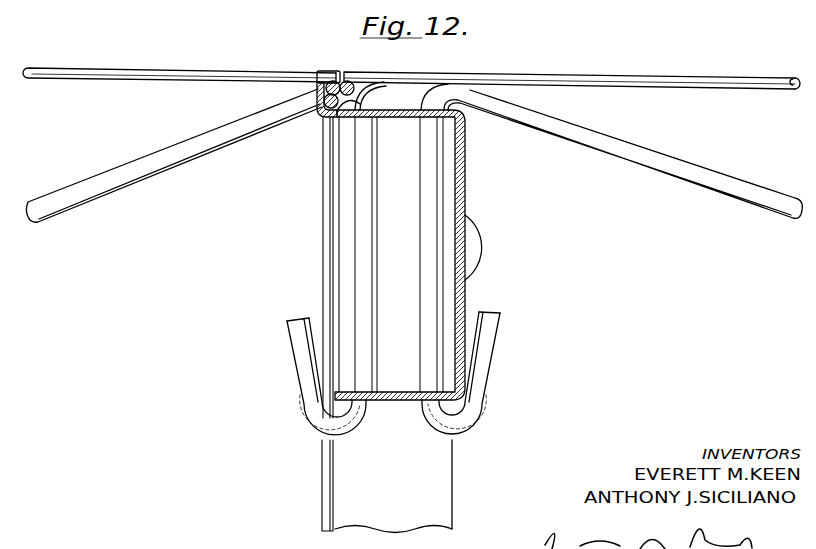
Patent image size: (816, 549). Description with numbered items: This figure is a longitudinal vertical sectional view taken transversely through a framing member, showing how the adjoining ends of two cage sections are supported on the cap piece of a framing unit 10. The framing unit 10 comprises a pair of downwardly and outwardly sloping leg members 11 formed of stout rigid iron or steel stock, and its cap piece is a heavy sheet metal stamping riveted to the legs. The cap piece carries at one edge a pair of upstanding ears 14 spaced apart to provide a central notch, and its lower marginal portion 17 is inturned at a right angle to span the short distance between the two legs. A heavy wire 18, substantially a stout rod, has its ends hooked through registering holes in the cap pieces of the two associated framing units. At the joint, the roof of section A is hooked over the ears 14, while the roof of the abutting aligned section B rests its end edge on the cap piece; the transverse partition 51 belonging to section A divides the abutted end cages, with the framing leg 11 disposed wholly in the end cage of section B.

The framing unit 10 is at (468, 455).
The leg member 11 is at (452, 494).
The upstanding ear 14 is at (320, 91).
The lower marginal portion 17 is at (388, 402).
The heavy wire 18 is at (173, 169).
The transverse partition 51 is at (327, 207).
The roof of one section A is at (186, 68).
The roof of abutting aligned section B is at (582, 74).